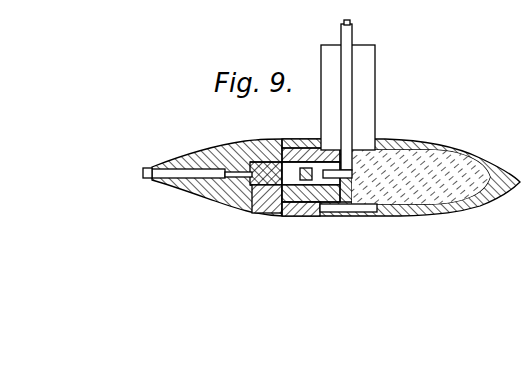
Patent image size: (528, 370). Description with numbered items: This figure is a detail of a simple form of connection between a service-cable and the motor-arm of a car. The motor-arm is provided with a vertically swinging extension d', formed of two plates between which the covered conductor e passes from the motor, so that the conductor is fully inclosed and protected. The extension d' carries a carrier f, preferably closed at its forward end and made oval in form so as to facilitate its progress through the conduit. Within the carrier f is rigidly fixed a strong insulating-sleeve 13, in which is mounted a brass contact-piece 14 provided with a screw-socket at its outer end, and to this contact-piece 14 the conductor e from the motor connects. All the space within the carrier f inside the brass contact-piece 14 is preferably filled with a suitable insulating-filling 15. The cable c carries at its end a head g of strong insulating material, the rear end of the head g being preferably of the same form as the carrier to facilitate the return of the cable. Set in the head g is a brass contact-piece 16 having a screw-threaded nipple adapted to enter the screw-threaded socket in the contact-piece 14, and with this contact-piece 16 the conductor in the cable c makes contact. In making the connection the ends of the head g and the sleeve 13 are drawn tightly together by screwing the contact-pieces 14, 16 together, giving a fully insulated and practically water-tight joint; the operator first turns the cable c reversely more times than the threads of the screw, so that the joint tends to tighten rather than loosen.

The cable c is at (158, 172).
The head g is at (224, 146).
The brass contact-piece 14 is at (314, 170).
The covered conductor e is at (345, 99).
The extension d' is at (358, 143).
The insulating-filling 15 is at (425, 133).
The carrier f is at (467, 153).
The brass contact-piece 16 is at (258, 190).
The insulating-sleeve 13 is at (314, 186).